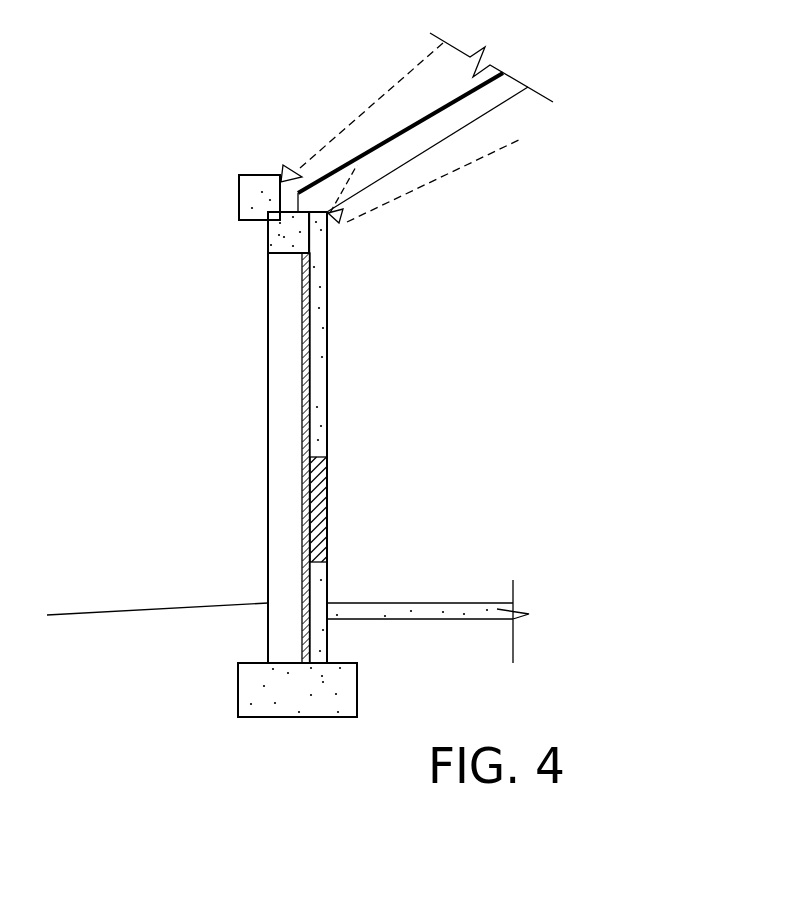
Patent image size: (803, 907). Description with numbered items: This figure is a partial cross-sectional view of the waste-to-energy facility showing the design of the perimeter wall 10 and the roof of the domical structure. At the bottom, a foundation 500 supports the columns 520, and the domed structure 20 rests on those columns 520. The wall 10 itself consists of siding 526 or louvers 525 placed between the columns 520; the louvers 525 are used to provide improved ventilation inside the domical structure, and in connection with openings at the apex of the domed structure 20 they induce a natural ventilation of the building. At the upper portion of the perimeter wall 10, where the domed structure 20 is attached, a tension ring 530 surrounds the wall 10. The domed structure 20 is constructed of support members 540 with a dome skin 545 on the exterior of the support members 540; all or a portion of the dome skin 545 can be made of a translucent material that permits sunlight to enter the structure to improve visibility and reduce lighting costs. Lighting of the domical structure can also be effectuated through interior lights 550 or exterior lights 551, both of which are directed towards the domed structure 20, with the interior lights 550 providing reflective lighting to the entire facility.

The perimeter wall 10 is at (180, 395).
The domed structure 20 is at (527, 60).
The foundation 500 is at (238, 676).
The columns 520 is at (268, 498).
The louvers 525 is at (327, 474).
The siding 526 is at (300, 317).
The tension ring 530 is at (239, 212).
The support members 540 is at (487, 100).
The dome skin 545 is at (443, 106).
The interior lights 550 is at (339, 223).
The exterior lights 551 is at (284, 165).